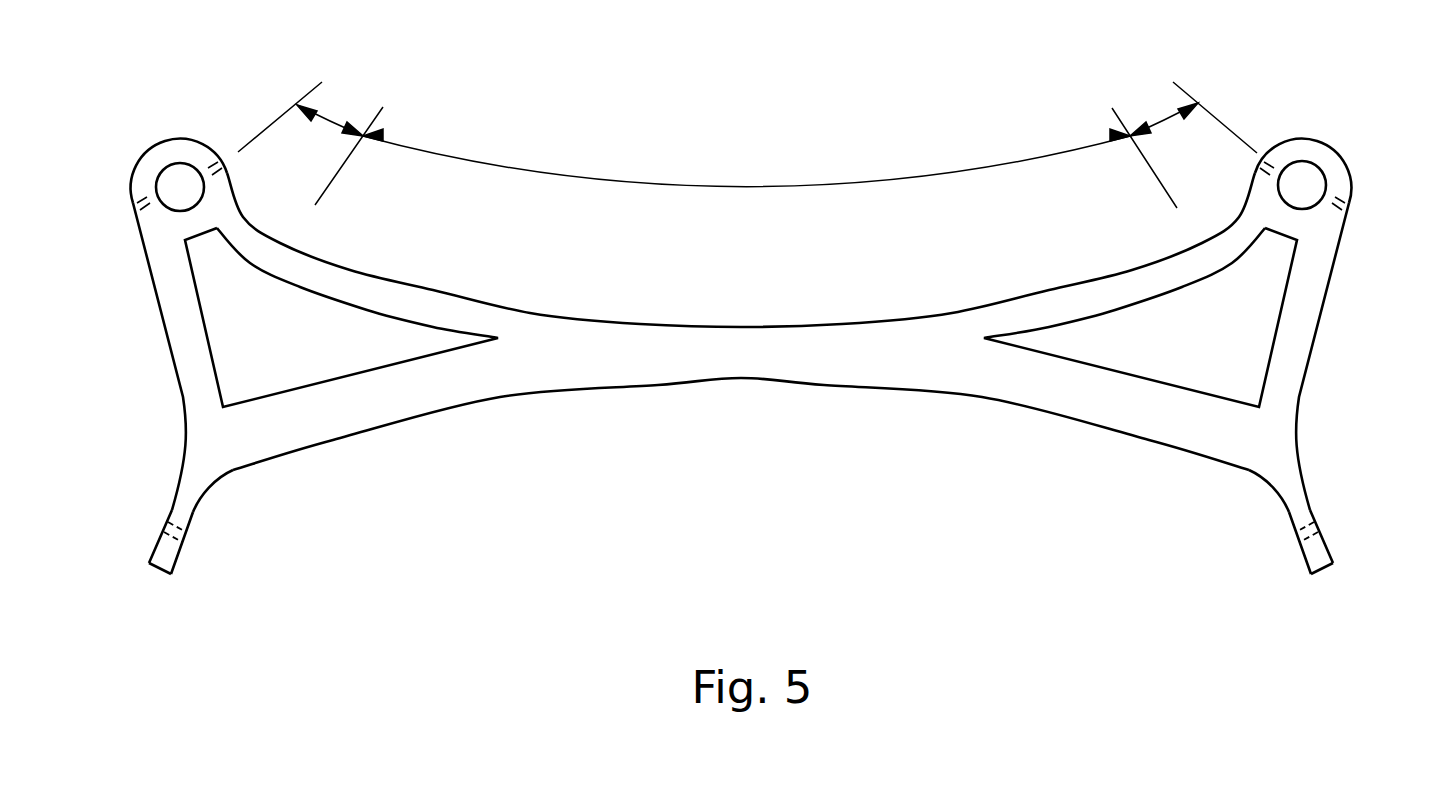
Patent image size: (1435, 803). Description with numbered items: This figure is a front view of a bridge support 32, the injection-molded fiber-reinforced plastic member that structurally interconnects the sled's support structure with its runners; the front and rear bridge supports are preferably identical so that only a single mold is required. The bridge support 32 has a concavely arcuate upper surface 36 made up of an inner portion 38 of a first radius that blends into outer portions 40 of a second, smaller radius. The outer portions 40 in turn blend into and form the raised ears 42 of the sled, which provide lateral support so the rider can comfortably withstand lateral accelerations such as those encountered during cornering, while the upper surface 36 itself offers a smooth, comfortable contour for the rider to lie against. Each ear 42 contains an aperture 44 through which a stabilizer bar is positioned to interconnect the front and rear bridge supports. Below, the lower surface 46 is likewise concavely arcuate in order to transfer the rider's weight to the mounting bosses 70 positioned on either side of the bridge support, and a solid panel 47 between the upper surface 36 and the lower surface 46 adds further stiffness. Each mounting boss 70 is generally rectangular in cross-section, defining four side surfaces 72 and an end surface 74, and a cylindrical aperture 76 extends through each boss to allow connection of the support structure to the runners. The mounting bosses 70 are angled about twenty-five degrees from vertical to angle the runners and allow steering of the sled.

The front bridge support 32 is at (1318, 337).
The concavely arcuate upper surface 36 is at (712, 310).
The inner portion 38 is at (752, 184).
The outer portions 40 is at (328, 122).
The ears 42 is at (180, 137).
The apertures 44 is at (163, 169).
The lower surface 46 is at (658, 405).
The solid panel 47 is at (313, 340).
The mounting bosses 70 is at (182, 540).
The side surfaces 72 is at (183, 516).
The end surface 74 is at (143, 588).
The cylindrical aperture 76 is at (163, 530).